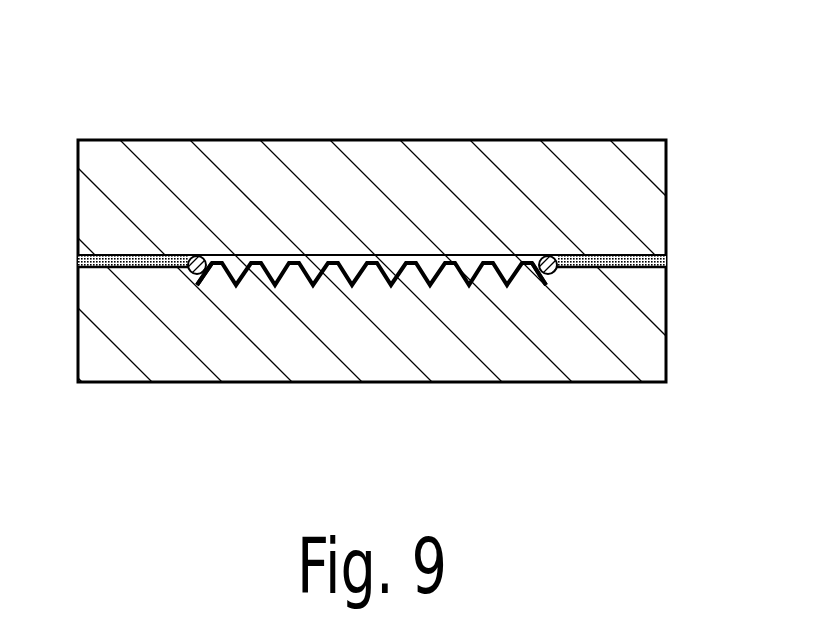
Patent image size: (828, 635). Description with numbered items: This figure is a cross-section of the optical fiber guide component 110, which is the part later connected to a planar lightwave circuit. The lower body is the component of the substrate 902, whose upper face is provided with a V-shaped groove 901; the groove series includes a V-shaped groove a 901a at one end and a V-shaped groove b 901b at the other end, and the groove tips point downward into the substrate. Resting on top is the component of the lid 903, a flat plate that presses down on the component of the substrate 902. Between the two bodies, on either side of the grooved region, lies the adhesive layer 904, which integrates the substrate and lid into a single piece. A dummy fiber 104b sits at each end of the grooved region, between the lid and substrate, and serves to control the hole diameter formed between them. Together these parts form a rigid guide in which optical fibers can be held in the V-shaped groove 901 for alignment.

The optical fiber guide component 110 is at (625, 58).
The component of a lid 903 is at (78, 165).
The component of a substrate 902 is at (78, 312).
The adhesive layer 904 is at (78, 262).
The dummy fiber 104b is at (197, 256).
The V-shaped groove 901 is at (272, 265).
The V-shaped groove a 901a is at (191, 277).
The V-shaped groove b 901b is at (540, 273).